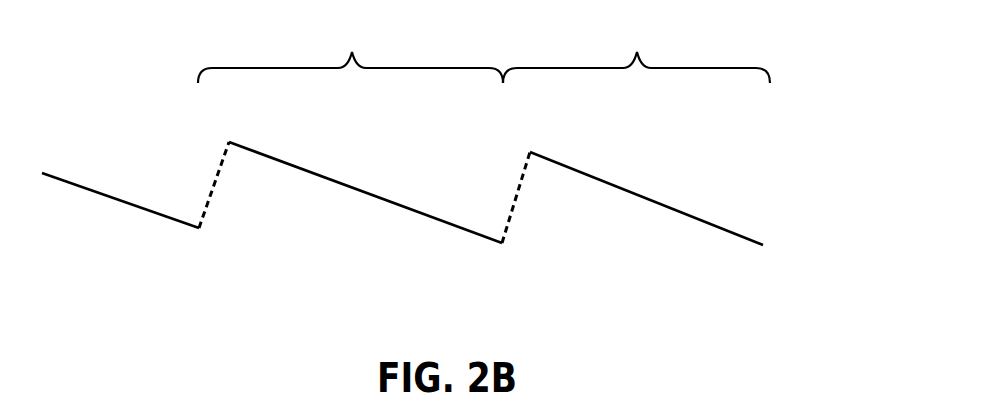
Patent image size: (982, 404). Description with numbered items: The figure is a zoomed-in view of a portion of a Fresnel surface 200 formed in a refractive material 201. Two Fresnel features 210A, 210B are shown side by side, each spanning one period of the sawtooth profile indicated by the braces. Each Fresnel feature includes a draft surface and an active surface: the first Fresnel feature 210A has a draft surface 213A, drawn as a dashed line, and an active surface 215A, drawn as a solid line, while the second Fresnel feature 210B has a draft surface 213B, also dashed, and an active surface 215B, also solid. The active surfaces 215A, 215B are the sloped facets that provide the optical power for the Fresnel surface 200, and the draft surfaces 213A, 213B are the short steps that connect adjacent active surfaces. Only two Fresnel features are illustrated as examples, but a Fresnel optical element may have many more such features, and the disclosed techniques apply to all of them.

The Fresnel surface 200 is at (462, 138).
The refractive material 201 is at (315, 248).
The Fresnel feature 210A is at (350, 55).
The Fresnel feature 210B is at (636, 54).
The draft surface 213A is at (217, 170).
The draft surface 213B is at (517, 177).
The active surface 215A is at (367, 187).
The active surface 215B is at (650, 195).